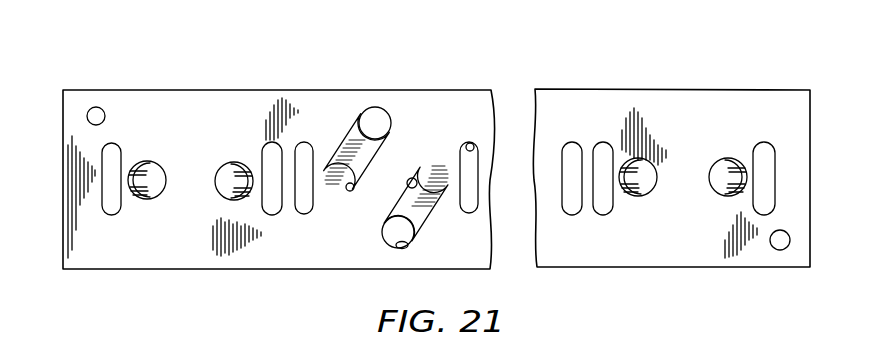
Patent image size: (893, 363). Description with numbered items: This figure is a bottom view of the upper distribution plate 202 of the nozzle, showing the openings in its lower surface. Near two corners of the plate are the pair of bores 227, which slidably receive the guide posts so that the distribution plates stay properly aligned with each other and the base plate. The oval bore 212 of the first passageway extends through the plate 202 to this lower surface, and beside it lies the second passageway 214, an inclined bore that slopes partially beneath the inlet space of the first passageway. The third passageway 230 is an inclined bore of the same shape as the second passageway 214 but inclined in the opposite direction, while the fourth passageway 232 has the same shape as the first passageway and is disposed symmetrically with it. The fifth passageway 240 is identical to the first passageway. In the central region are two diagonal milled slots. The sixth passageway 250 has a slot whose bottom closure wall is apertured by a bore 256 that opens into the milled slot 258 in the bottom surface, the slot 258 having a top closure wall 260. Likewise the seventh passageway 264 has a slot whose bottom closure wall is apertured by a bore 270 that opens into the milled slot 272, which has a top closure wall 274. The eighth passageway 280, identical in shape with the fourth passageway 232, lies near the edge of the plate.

The upper distribution plate 202 is at (243, 91).
The bores 227 is at (93, 112).
The bore 212 is at (105, 201).
The second passageway 214 is at (141, 174).
The third passageway 230 is at (243, 172).
The fourth passageway 232 is at (266, 205).
The fifth passageway 240 is at (300, 205).
The bore 270 is at (379, 116).
The top closure wall 274 is at (351, 161).
The seventh passageway 264 is at (350, 164).
The milled slot 258 is at (407, 184).
The milled slot 272 is at (372, 152).
The sixth passageway 250 is at (419, 202).
The bore 256 is at (450, 188).
The top closure wall 260 is at (432, 197).
The eighth passageway 280 is at (471, 145).